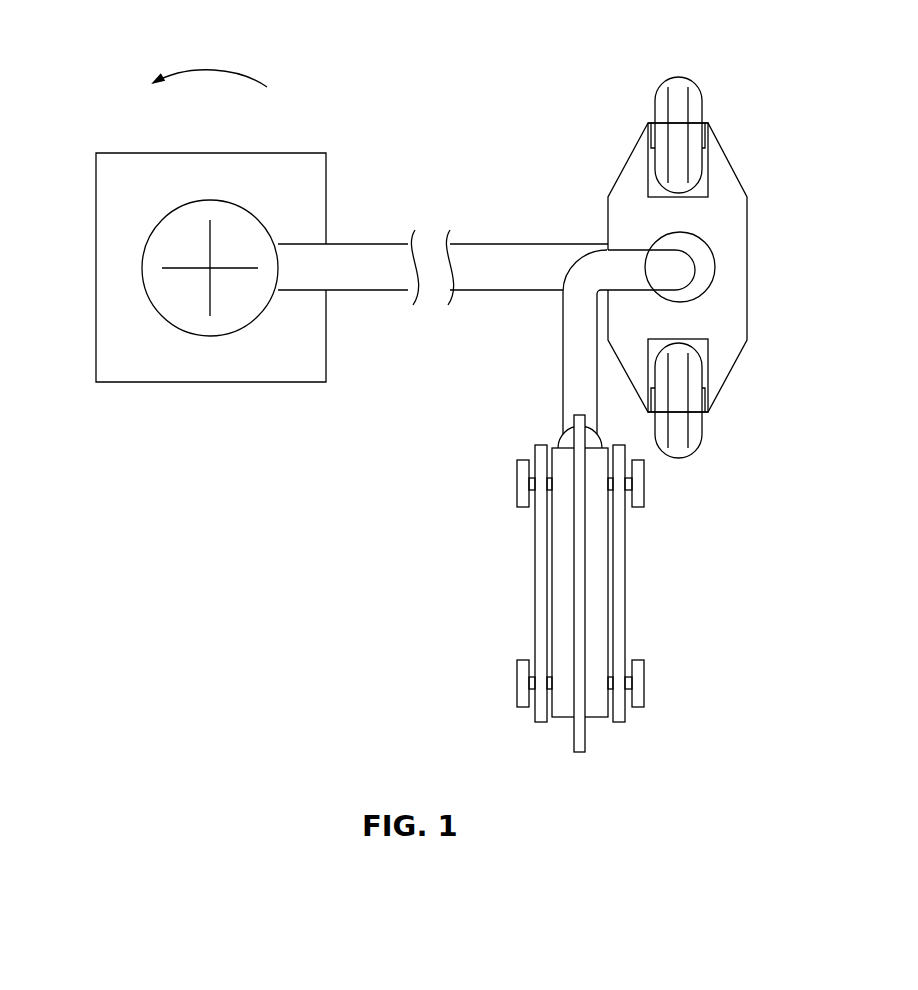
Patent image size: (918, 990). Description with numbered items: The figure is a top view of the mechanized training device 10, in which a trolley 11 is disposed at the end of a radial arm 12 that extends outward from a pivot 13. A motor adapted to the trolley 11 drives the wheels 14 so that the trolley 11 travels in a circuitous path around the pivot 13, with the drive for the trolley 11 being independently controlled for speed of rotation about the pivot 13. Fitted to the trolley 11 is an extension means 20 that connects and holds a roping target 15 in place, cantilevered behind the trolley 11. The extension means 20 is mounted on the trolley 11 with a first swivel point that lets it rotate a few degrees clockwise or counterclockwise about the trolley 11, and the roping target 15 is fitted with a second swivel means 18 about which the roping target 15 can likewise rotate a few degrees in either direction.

The mechanized training device 10 is at (125, 48).
The trolley 11 is at (728, 48).
The radial arm 12 is at (482, 244).
The pivot 13 is at (158, 432).
The wheels 14 is at (702, 108).
The roping target 15 is at (488, 724).
The second swivel means 18 is at (628, 252).
The extension means 20 is at (142, 267).